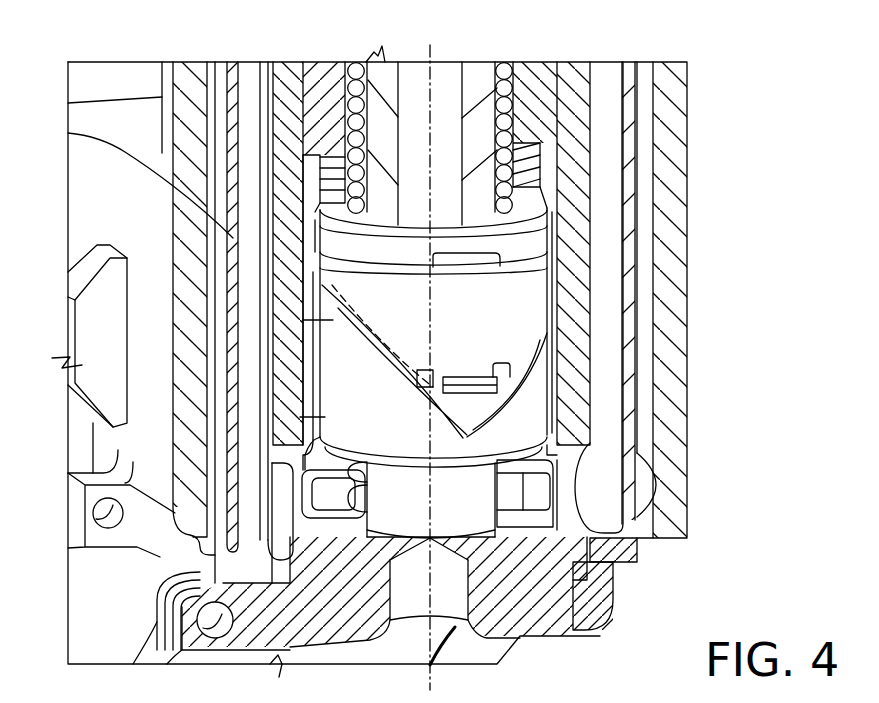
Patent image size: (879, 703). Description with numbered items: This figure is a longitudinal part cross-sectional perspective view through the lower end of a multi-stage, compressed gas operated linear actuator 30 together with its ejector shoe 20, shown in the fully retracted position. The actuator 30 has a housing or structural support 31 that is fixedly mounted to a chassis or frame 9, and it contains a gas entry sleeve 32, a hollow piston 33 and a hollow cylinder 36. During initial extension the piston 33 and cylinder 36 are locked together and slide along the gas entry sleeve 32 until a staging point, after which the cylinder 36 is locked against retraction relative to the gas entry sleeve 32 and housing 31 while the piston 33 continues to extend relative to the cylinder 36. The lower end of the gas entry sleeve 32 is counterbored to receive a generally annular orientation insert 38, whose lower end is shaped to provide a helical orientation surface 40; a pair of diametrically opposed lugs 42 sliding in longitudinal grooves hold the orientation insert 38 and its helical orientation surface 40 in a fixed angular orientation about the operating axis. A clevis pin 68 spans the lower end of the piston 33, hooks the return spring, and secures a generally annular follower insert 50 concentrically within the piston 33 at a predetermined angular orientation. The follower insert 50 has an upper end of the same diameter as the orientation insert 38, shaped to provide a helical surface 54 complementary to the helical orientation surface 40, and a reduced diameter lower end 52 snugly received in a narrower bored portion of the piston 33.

The linear actuator 30 is at (702, 44).
The chassis or frame 9 is at (133, 113).
The housing or structural support 31 is at (187, 77).
The hollow piston 33 is at (290, 77).
The gas entry sleeve 32 is at (533, 77).
The hollow cylinder 36 is at (632, 77).
The orientation insert 38 is at (325, 268).
The helical orientation surface 40 is at (320, 299).
The lugs 42 is at (470, 397).
The helical surface 54 is at (333, 327).
The follower insert 50 is at (325, 415).
The clevis pin 68 is at (317, 503).
The reduced diameter lower end 52 is at (487, 500).
The ejector shoe 20 is at (603, 590).